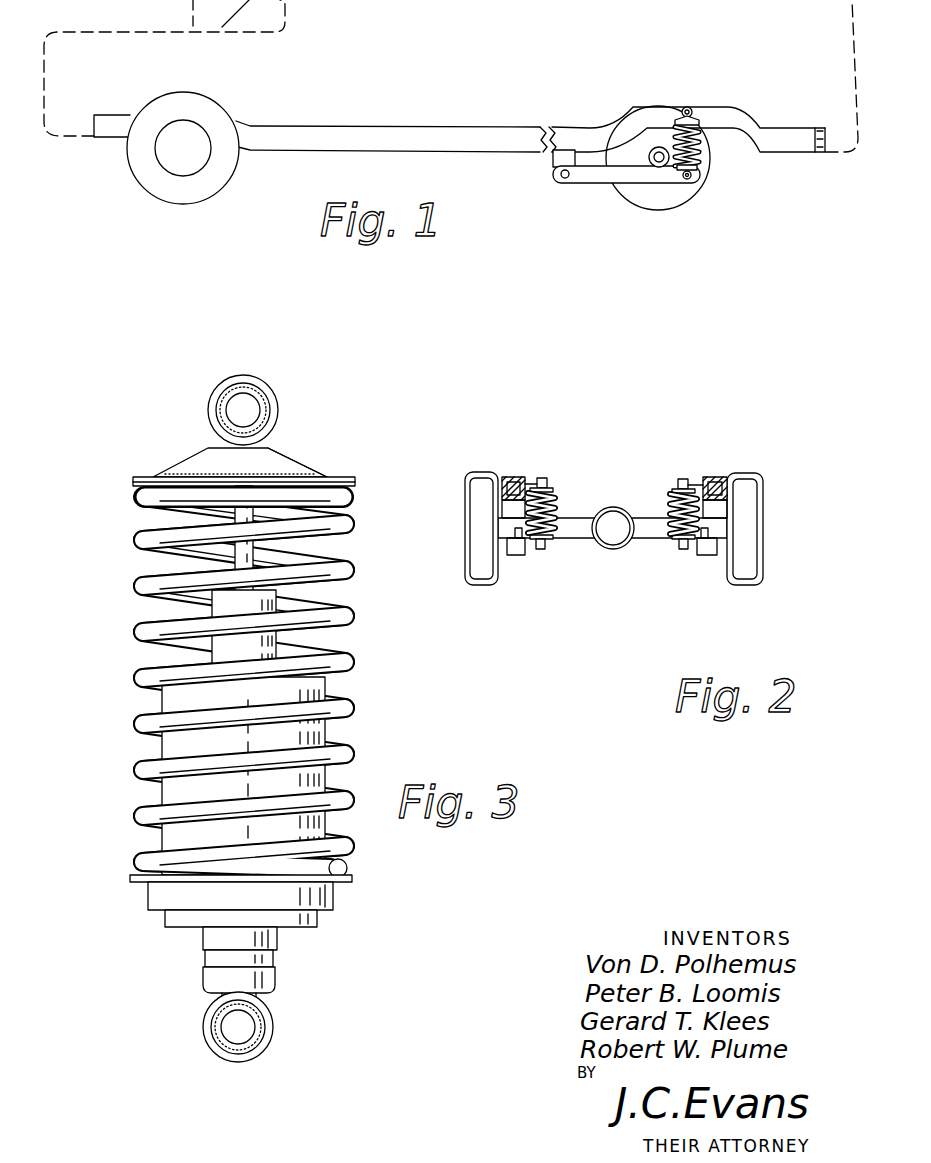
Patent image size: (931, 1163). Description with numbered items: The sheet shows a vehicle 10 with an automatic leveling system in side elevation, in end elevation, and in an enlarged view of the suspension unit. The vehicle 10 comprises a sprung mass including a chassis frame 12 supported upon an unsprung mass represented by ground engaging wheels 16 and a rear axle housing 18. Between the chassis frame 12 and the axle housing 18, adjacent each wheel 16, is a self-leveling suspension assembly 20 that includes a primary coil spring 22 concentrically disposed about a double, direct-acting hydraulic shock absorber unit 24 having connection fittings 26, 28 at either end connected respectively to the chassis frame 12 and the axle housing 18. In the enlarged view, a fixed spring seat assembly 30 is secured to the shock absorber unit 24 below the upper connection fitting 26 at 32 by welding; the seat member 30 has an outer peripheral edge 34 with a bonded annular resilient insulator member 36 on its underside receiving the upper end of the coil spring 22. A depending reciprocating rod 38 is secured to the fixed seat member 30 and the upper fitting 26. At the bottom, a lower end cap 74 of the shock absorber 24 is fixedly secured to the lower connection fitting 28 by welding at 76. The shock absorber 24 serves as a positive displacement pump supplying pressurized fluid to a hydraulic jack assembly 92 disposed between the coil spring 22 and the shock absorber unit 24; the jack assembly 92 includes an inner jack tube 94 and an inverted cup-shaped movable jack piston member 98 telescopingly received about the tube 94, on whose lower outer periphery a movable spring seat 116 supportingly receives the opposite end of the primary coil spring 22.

In FIG. 2, the vehicle 10 is at (612, 564).
In FIG. 1, the chassis frame 12 is at (270, 135).
In FIG. 2, the chassis frame 12 is at (508, 477).
In FIG. 1, the ground engaging wheels 16 is at (168, 190).
In FIG. 2, the ground engaging wheels 16 is at (480, 568).
In FIG. 1, the rear axle housing 18 is at (657, 152).
In FIG. 2, the rear axle housing 18 is at (640, 536).
In FIG. 1, the self-leveling suspension assembly 20 is at (714, 143).
In FIG. 2, the self-leveling suspension assembly 20 is at (611, 516).
In FIG. 3, the self-leveling suspension assembly 20 is at (222, 738).
In FIG. 1, the primary coil spring 22 is at (700, 150).
In FIG. 2, the primary coil spring 22 is at (557, 515).
In FIG. 3, the primary coil spring 22 is at (222, 681).
In FIG. 3, the shock absorber unit 24 is at (280, 604).
In FIG. 1, the upper connection fitting 26 is at (686, 107).
In FIG. 2, the upper connection fitting 26 is at (541, 478).
In FIG. 3, the upper connection fitting 26 is at (212, 393).
In FIG. 1, the lower connection fitting 28 is at (690, 180).
In FIG. 2, the lower connection fitting 28 is at (540, 551).
In FIG. 3, the lower connection fitting 28 is at (233, 1063).
In FIG. 3, the fixed spring seat assembly 30 is at (197, 460).
In FIG. 3, the weld location 32 is at (264, 451).
In FIG. 3, the outer peripheral edge 34 is at (147, 477).
In FIG. 3, the annular resilient insulator member 36 is at (140, 493).
In FIG. 3, the reciprocating rod 38 is at (232, 556).
In FIG. 3, the lower end cap 74 is at (210, 978).
In FIG. 3, the weld 76 is at (255, 998).
In FIG. 3, the hydraulic jack assembly 92 is at (161, 752).
In FIG. 3, the inner jack tube 94 is at (165, 918).
In FIG. 3, the movable jack piston member 98 is at (175, 793).
In FIG. 3, the movable spring seat 116 is at (135, 880).